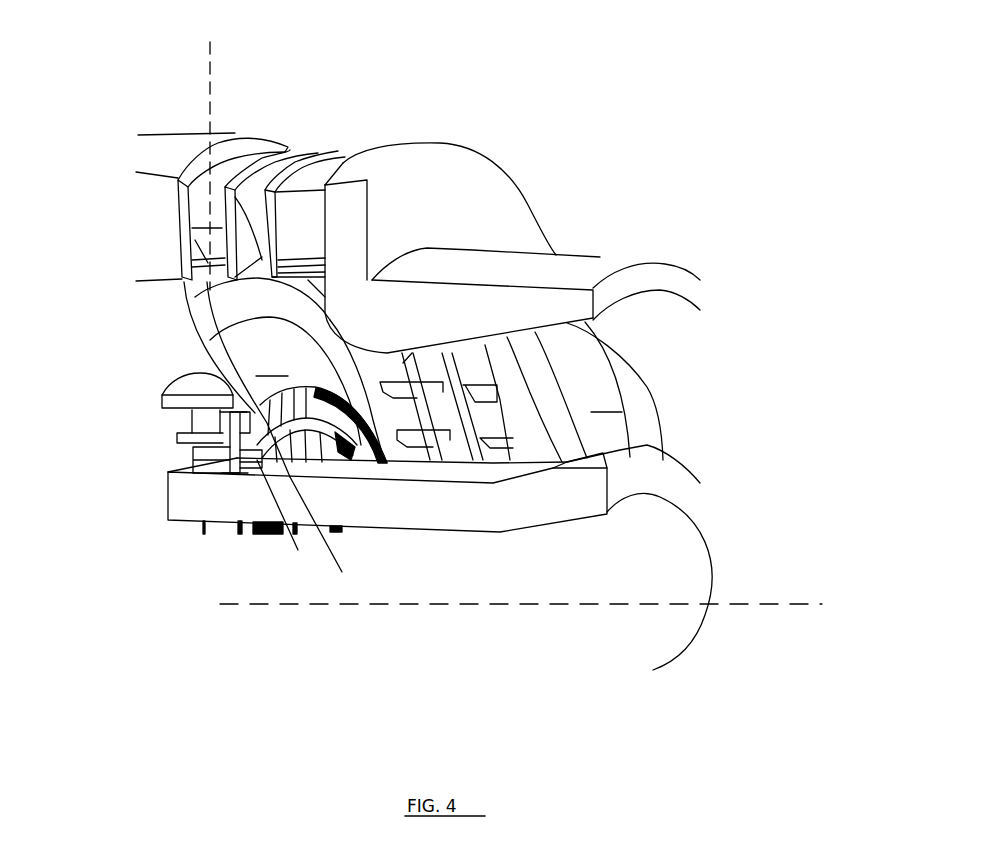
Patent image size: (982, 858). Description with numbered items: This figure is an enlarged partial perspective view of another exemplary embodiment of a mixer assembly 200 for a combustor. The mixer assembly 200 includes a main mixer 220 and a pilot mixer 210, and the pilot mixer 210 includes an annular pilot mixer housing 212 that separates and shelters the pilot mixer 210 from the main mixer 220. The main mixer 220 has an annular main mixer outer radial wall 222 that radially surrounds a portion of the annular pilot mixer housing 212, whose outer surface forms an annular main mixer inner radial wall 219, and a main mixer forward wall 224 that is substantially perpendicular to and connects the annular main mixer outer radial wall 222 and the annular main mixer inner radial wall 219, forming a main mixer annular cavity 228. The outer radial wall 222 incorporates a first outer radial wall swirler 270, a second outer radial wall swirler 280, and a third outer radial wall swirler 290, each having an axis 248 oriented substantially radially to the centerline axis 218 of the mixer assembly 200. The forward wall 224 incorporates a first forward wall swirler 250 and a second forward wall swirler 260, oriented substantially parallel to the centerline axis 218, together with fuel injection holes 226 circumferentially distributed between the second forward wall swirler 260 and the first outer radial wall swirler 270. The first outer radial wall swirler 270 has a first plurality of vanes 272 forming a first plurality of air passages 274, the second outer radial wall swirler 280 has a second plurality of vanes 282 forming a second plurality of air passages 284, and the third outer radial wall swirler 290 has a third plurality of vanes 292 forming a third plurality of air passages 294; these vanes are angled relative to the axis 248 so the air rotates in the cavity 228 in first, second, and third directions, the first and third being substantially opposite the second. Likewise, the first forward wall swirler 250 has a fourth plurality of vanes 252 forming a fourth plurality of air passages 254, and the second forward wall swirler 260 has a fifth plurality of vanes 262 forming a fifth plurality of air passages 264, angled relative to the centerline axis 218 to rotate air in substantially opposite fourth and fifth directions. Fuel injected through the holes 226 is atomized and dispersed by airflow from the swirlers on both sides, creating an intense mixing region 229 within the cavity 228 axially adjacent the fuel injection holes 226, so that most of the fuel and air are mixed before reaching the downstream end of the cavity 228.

The mixer assembly 200 is at (679, 108).
The pilot mixer 210 is at (679, 553).
The annular pilot mixer housing 212 is at (543, 490).
The centerline axis 218 is at (732, 606).
The annular main mixer inner radial wall 219 is at (550, 470).
The main mixer 220 is at (681, 367).
The annular main mixer outer radial wall 222 is at (690, 283).
The main mixer forward wall 224 is at (188, 328).
The fuel injection holes 226 is at (217, 285).
The main mixer annular cavity 228 is at (565, 397).
The intense mixing region 229 is at (298, 390).
The axis 248 is at (211, 70).
The first forward wall swirler 250 is at (182, 461).
The fourth plurality of vanes 252 is at (200, 450).
The fourth plurality of air passages 254 is at (287, 516).
The second forward wall swirler 260 is at (181, 423).
The fifth plurality of vanes 262 is at (188, 415).
The fifth plurality of air passages 264 is at (331, 535).
The first outer radial wall swirler 270 is at (253, 139).
The first plurality of vanes 272 is at (203, 247).
The first plurality of air passages 274 is at (400, 417).
The second outer radial wall swirler 280 is at (308, 142).
The second plurality of vanes 282 is at (253, 223).
The second plurality of air passages 284 is at (460, 443).
The third outer radial wall swirler 290 is at (358, 146).
The third plurality of vanes 292 is at (327, 185).
The third plurality of air passages 294 is at (490, 422).